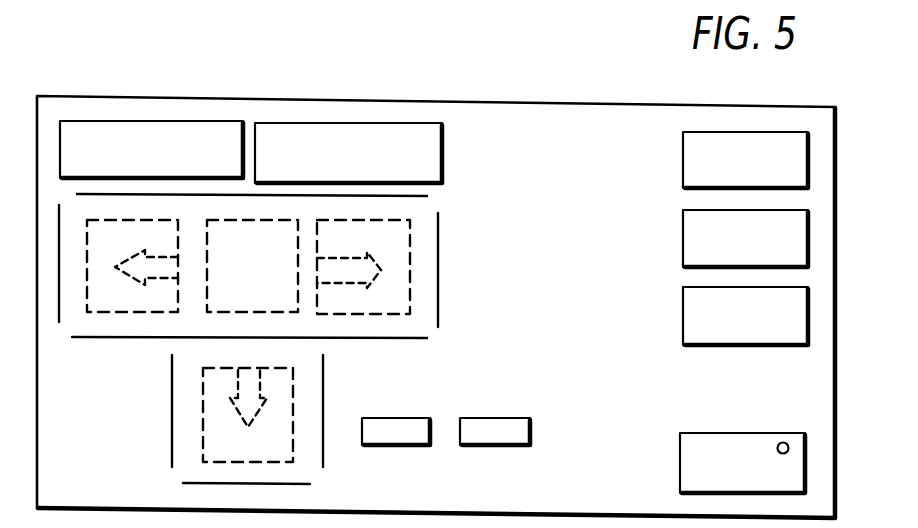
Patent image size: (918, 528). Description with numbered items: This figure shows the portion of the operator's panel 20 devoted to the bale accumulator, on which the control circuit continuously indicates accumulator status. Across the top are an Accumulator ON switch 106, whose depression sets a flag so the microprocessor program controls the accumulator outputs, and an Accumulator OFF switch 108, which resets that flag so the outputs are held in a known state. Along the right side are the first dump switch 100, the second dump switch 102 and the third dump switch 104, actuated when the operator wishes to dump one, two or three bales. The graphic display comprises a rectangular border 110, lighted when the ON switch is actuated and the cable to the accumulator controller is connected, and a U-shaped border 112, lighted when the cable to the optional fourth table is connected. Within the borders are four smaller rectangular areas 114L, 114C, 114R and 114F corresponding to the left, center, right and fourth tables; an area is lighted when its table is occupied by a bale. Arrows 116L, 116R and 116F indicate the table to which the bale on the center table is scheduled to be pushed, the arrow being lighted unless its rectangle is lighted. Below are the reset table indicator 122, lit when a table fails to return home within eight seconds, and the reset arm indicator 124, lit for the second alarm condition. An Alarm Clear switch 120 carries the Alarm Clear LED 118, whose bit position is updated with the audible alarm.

The operator's panel 20 is at (679, 107).
The Dump 1 switch 100 is at (683, 155).
The Dump 2 switch 102 is at (683, 233).
The Dump 3 switch 104 is at (683, 311).
The Accumulator ON switch 106 is at (212, 121).
The Accumulator OFF switch 108 is at (395, 123).
The rectangular border 110 is at (438, 242).
The U-shaped border 112 is at (323, 388).
The left rectangular area 114L is at (114, 328).
The center rectangular area 114C is at (236, 313).
The right rectangular area 114R is at (352, 314).
The fourth-table rectangular area 114F is at (308, 355).
The left arrow 116L is at (114, 268).
The right arrow 116R is at (371, 259).
The fourth-table arrow 116F is at (248, 424).
The Alarm Clear LED 118 is at (787, 443).
The Alarm Clear switch 120 is at (681, 455).
The reset table indicator 122 is at (407, 418).
The reset arm indicator 124 is at (507, 418).